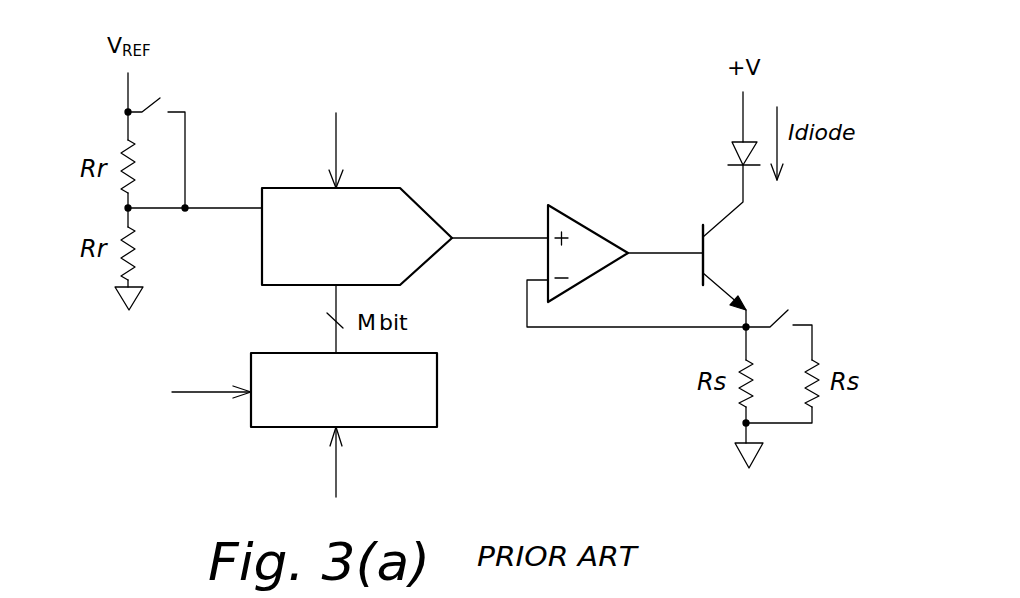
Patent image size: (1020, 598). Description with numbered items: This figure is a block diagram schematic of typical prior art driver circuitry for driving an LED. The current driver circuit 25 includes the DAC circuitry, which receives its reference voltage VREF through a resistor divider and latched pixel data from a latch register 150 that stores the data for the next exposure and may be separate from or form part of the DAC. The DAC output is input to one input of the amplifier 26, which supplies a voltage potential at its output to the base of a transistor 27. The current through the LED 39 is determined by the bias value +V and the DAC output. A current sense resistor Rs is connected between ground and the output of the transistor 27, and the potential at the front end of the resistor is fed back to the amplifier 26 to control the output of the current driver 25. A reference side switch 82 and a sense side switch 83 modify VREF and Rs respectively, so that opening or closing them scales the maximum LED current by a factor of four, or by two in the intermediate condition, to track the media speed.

The current driver circuit 25 is at (380, 110).
The amplifier 26 is at (580, 223).
The transistor 27 is at (733, 263).
The LED 39 is at (755, 140).
The reference side switch 82 is at (167, 105).
The sense side switch 83 is at (795, 320).
The latch register 150 is at (437, 407).